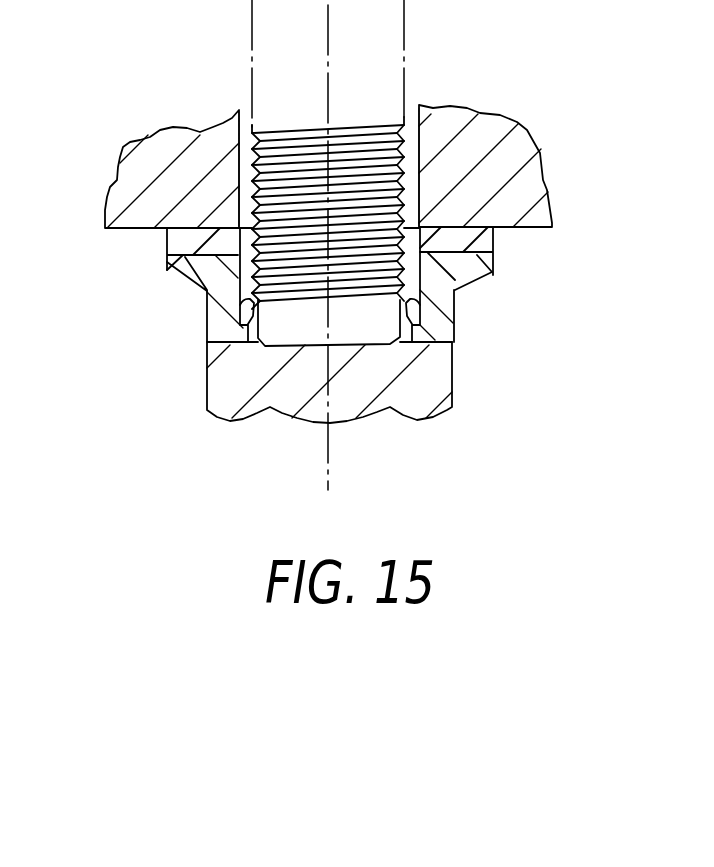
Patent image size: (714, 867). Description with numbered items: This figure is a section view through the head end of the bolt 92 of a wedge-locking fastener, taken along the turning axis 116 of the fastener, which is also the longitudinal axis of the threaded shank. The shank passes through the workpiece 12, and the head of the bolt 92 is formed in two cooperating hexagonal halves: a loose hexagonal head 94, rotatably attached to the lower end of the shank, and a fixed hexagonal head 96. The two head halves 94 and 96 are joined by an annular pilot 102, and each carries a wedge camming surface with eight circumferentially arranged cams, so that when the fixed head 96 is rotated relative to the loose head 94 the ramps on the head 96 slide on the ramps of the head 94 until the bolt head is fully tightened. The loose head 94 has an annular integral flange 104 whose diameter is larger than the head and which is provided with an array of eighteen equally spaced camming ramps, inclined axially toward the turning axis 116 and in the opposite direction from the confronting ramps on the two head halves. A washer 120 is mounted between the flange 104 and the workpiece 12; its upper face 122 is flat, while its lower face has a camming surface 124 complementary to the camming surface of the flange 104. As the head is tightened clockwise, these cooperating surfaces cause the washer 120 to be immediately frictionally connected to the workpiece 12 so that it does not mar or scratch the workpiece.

The workpiece 12 is at (517, 140).
The bolt 92 is at (422, 110).
The turning axis 116 is at (330, 75).
The washer 120 is at (165, 238).
The upper face 122 is at (467, 227).
The camming surface 124 is at (175, 279).
The annular integral flange 104 is at (490, 272).
The hexagonal head 94 is at (454, 312).
The annular pilot 102 is at (247, 306).
The hexagonal head 96 is at (455, 378).